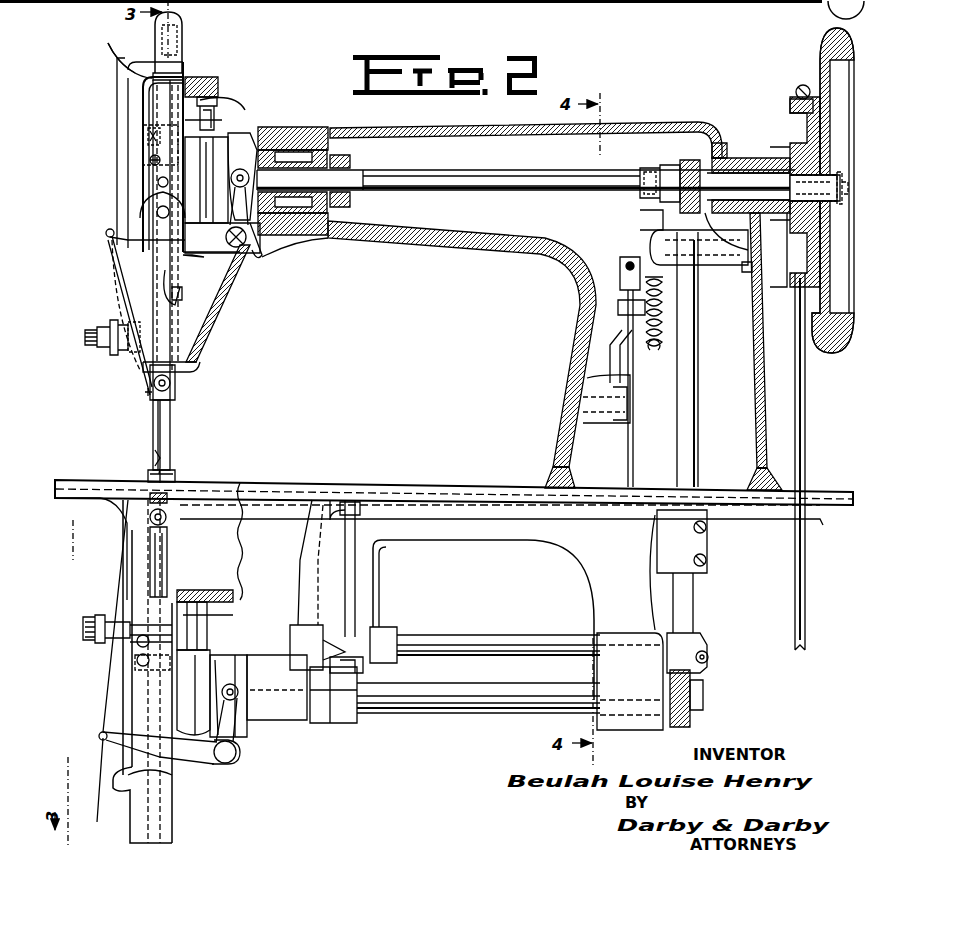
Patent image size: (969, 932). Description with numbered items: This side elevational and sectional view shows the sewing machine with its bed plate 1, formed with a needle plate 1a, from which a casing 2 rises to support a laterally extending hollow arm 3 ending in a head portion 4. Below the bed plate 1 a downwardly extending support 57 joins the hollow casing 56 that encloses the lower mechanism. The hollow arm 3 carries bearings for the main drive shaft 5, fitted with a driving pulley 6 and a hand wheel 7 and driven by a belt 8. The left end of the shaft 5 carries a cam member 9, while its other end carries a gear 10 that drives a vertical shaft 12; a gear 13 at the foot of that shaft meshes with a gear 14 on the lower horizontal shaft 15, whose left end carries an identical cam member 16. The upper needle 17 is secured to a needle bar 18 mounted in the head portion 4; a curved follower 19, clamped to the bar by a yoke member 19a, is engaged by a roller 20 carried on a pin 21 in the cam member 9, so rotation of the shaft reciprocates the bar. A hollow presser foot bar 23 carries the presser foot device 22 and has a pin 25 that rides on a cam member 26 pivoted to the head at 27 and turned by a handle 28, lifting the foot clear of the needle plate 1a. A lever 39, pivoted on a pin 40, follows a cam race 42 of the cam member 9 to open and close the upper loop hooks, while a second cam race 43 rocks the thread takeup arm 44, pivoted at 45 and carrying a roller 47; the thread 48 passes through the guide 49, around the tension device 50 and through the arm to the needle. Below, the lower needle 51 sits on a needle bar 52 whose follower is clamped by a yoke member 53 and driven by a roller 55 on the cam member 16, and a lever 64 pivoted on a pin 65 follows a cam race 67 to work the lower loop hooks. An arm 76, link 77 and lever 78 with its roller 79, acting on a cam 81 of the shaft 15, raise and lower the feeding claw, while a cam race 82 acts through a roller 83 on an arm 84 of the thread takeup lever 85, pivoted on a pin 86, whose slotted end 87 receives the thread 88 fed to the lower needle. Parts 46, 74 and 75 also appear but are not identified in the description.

The bed plate 1 is at (818, 493).
The needle plate 1a is at (230, 480).
The casing 2 is at (767, 405).
The hollow arm 3 is at (407, 240).
The head portion 4 is at (213, 332).
The main drive shaft 5 is at (497, 195).
The driving pulley 6 is at (796, 95).
The hand wheel 7 is at (817, 42).
The belt 8 is at (799, 86).
The cam member 9 is at (246, 152).
The gear 10 is at (692, 160).
The vertical shaft 12 is at (698, 370).
The gear 13 is at (693, 687).
The gear 14 is at (690, 722).
The horizontal shaft 15 is at (480, 708).
The cam member 16 is at (245, 735).
The upper needle 17 is at (165, 415).
The needle bar 18 is at (203, 355).
The curved follower 19 is at (173, 163).
The yoke member 19a is at (143, 143).
The roller 20 is at (175, 127).
The pin 21 is at (212, 165).
The presser foot device 22 is at (172, 473).
The presser foot bar 23 is at (153, 422).
The pin 25 is at (160, 182).
The cam member 26 is at (157, 210).
The pivot 27 is at (157, 222).
The handle 28 is at (182, 287).
The lever 39 is at (190, 92).
The pin 40 is at (224, 100).
The cam race 42 is at (240, 160).
The cam race 43 is at (262, 128).
The thread takeup arm 44 is at (200, 242).
The pivot 45 is at (242, 276).
The screw 46 is at (268, 238).
The roller 47 is at (257, 257).
The thread 48 is at (122, 278).
The guide 49 is at (107, 50).
The tension device 50 is at (113, 352).
The lower needle 51 is at (155, 455).
The needle bar 52 is at (153, 560).
The yoke member 53 is at (140, 657).
The roller 55 is at (167, 673).
The hollow casing 56 is at (115, 773).
The support 57 is at (592, 598).
The lever 64 is at (180, 597).
The pin 65 is at (207, 612).
The cam race 67 is at (192, 660).
The shaft bearing 74 is at (413, 640).
The frame 75 is at (380, 562).
The arm 76 is at (355, 485).
The link 77 is at (348, 567).
The lever 78 is at (327, 637).
The roller 79 is at (367, 672).
The cam 81 is at (348, 712).
The cam race 82 is at (222, 670).
The roller 83 is at (238, 698).
The arm 84 is at (230, 733).
The thread takeup lever 85 is at (197, 753).
The pin 86 is at (222, 757).
The end of thread takeup lever 87 is at (103, 737).
The thread 88 is at (105, 715).